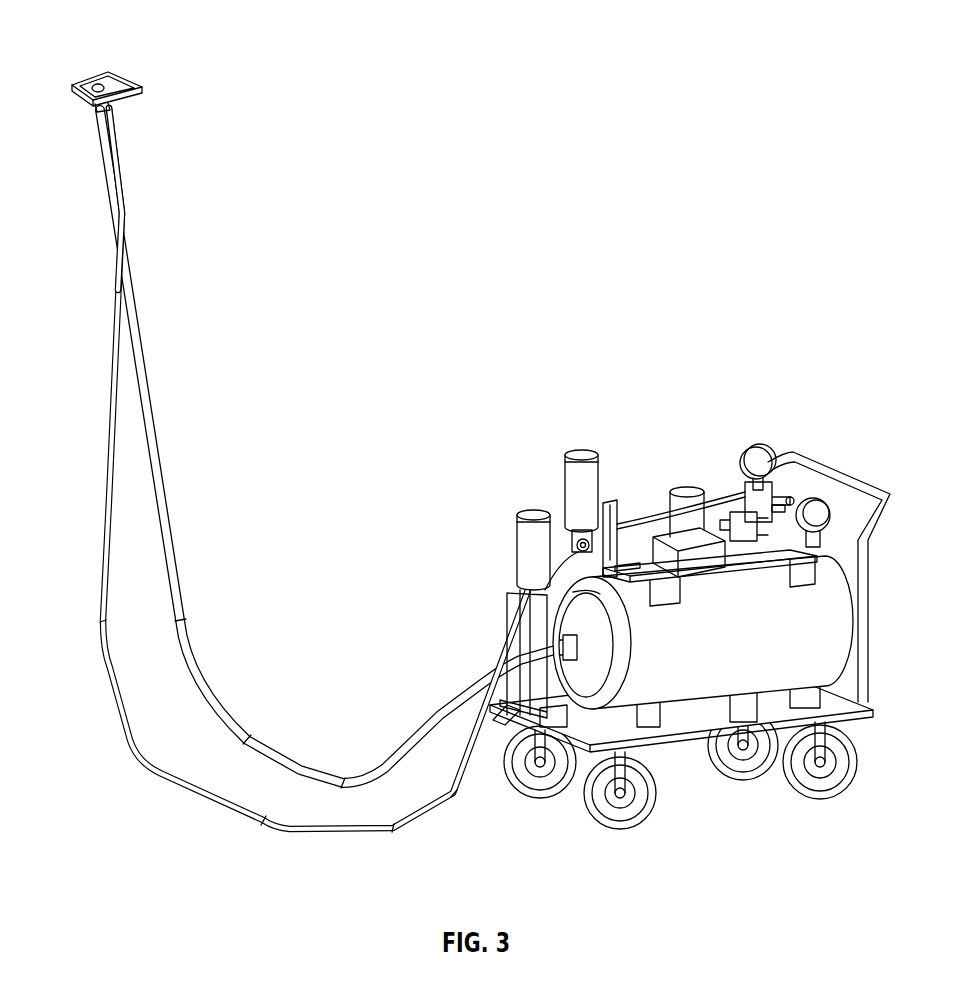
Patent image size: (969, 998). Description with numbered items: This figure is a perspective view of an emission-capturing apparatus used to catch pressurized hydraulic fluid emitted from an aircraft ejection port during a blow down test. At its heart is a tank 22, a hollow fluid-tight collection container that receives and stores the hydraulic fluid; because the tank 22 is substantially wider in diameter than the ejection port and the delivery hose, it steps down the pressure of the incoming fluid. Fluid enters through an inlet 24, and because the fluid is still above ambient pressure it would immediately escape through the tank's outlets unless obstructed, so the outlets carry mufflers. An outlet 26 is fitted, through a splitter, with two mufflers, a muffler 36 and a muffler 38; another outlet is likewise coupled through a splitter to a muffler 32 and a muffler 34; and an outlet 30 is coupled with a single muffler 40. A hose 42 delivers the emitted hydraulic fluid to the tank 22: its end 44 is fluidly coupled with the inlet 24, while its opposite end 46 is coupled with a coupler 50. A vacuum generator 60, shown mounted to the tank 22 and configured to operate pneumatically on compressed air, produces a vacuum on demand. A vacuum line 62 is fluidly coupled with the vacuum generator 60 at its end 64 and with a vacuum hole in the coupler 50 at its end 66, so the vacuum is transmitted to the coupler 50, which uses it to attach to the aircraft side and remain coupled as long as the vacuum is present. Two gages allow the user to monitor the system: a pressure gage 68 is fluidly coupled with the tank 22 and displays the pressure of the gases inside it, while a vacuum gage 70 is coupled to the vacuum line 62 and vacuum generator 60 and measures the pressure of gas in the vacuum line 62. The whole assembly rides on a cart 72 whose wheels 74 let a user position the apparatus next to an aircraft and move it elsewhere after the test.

The tank 22 is at (775, 615).
The inlet 24 is at (582, 640).
The outlet 26 is at (522, 618).
The outlet 30 is at (566, 538).
The muffler 32 is at (533, 540).
The muffler 34 is at (625, 535).
The muffler 36 is at (684, 488).
The muffler 38 is at (786, 507).
The muffler 40 is at (578, 450).
The hose 42 is at (197, 666).
The end 44 is at (572, 660).
The end 46 is at (99, 110).
The coupler 50 is at (113, 75).
The vacuum generator 60 is at (722, 523).
The vacuum line 62 is at (108, 445).
The end 64 is at (752, 485).
The end 66 is at (119, 158).
The pressure gage 68 is at (822, 518).
The vacuum gage 70 is at (777, 455).
The cart 72 is at (868, 702).
The wheels 74 is at (750, 775).